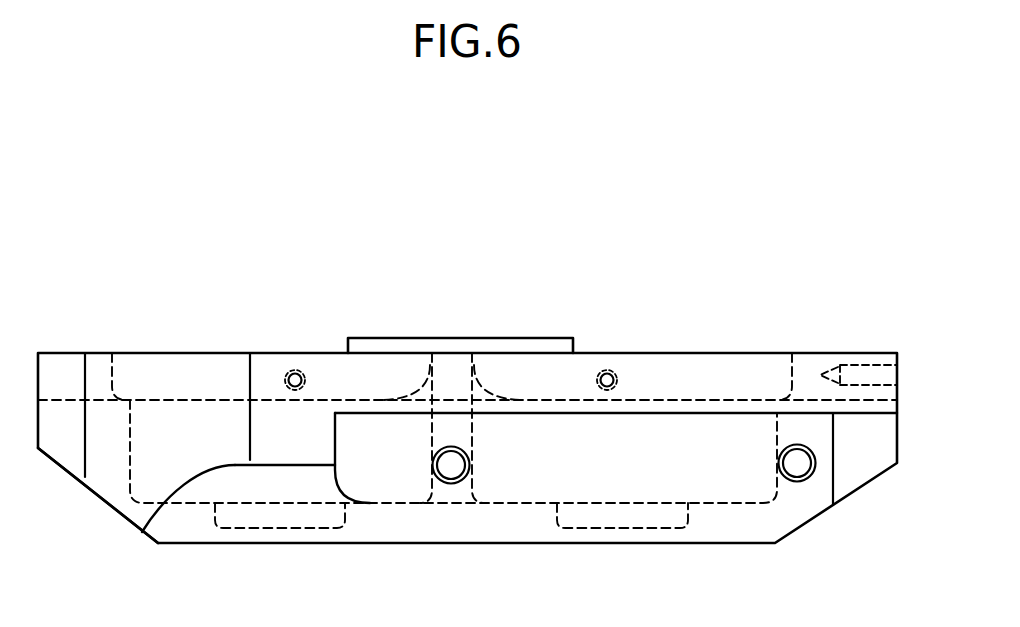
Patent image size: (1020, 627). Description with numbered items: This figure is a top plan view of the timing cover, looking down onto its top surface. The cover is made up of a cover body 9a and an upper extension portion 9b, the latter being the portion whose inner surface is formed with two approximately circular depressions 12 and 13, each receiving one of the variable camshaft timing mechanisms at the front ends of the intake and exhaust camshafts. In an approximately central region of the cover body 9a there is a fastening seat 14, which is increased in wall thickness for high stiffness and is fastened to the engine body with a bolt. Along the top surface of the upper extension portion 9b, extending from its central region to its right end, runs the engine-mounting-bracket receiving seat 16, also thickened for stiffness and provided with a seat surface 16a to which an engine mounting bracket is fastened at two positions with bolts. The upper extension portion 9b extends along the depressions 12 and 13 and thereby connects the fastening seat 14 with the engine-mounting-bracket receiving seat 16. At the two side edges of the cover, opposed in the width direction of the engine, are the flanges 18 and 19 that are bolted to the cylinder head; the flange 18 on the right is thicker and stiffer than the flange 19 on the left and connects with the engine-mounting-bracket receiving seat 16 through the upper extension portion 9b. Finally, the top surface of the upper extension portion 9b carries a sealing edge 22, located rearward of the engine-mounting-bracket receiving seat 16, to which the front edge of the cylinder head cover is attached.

The cover body 9a is at (285, 322).
The upper extension portion 9b is at (92, 493).
The depression 12 is at (730, 427).
The depression 13 is at (183, 408).
The fastening seat 14 is at (437, 343).
The engine-mounting-bracket receiving seat 16 is at (803, 427).
The seat surface 16a is at (747, 458).
The flange 18 is at (884, 353).
The flange 19 is at (58, 351).
The sealing edge 22 is at (647, 366).